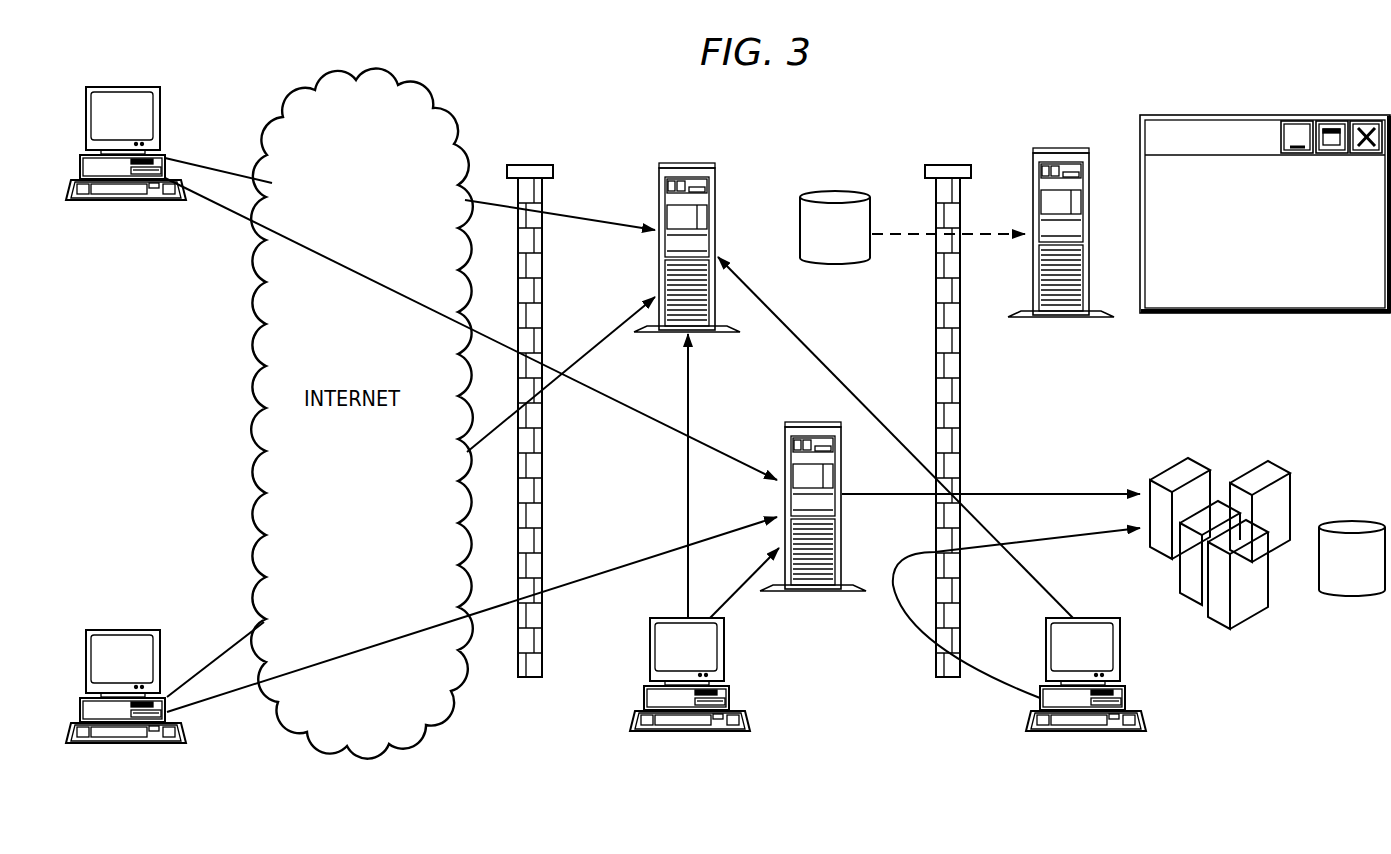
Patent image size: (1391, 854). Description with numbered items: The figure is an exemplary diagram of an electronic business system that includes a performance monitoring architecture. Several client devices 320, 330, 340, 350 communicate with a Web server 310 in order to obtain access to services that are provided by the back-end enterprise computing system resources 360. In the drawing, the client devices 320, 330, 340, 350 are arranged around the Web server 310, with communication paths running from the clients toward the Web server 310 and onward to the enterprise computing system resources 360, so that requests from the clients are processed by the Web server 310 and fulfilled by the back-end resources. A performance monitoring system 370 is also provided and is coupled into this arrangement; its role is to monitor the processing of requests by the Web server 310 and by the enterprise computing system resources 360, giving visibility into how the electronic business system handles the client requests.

The Web server 310 is at (784, 436).
The client device 320 is at (118, 87).
The client device 330 is at (122, 629).
The client device 340 is at (650, 657).
The client device 350 is at (1121, 652).
The enterprise computing system resources 360 is at (1252, 612).
The performance monitoring system 370 is at (658, 188).